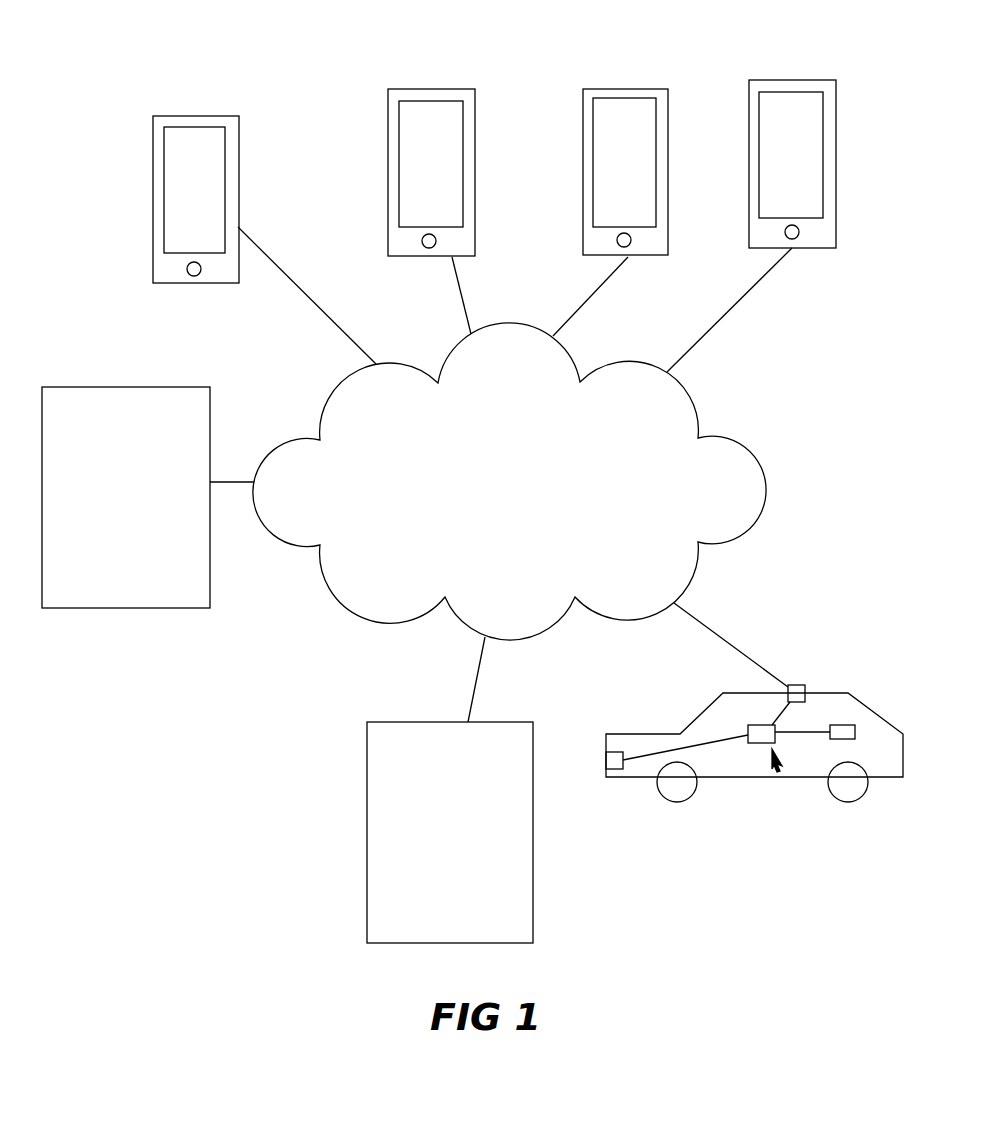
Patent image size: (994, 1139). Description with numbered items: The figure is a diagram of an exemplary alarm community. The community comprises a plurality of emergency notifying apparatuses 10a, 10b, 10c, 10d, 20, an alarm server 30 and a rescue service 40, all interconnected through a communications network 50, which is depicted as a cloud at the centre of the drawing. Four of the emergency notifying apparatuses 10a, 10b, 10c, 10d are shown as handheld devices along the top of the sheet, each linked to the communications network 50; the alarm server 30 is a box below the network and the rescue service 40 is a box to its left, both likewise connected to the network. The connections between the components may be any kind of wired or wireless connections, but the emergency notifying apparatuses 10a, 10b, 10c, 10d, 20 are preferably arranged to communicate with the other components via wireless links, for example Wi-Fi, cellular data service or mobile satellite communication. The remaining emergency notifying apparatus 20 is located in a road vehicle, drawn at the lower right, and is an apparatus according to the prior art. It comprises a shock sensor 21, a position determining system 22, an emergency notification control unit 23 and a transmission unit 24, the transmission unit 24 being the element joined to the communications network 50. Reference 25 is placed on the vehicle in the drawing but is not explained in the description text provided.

The emergency notifying apparatus 10a is at (220, 122).
The emergency notifying apparatus 10b is at (458, 97).
The emergency notifying apparatus 10c is at (650, 93).
The emergency notifying apparatus 10d is at (818, 87).
The emergency notifying apparatus 20 is at (777, 767).
The shock sensor 21 is at (618, 770).
The position determining system 22 is at (848, 733).
The emergency notification control unit 23 is at (753, 747).
The transmission unit 24 is at (790, 683).
The vehicle 25 is at (852, 713).
The alarm server 30 is at (383, 752).
The rescue service 40 is at (98, 602).
The communications network 50 is at (737, 490).